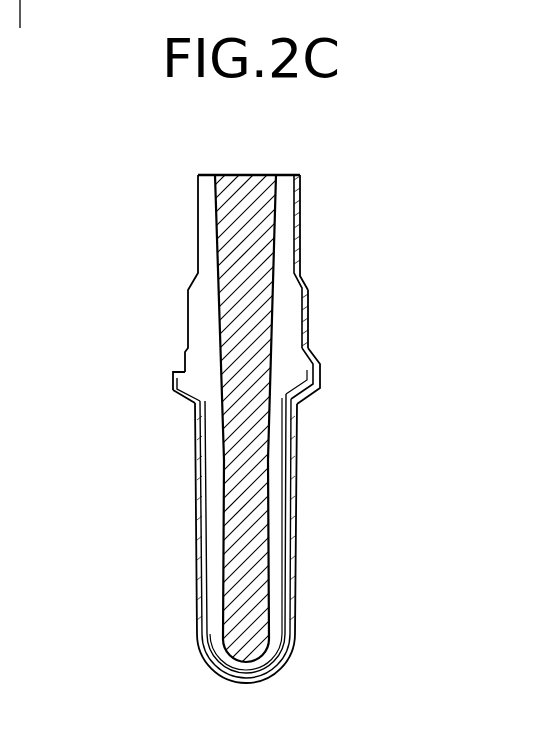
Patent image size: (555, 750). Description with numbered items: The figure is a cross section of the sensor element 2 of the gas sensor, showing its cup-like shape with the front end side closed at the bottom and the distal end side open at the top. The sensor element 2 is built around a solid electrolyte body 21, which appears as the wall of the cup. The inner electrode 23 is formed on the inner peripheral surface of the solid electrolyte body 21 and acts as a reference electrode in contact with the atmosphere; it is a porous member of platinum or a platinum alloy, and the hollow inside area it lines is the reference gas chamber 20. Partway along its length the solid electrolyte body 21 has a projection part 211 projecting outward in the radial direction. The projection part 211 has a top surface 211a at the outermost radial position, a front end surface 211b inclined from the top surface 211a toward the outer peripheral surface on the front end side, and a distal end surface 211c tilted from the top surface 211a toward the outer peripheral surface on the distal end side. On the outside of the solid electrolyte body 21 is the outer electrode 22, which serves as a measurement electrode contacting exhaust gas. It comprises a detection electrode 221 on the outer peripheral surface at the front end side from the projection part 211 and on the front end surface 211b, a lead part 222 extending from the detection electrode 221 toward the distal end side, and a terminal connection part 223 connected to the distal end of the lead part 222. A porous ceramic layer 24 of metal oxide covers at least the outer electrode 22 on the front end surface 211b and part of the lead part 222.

The sensor element 2 is at (165, 168).
The reference gas chamber 20 is at (246, 594).
The solid electrolyte body 21 is at (203, 220).
The projection part 211 is at (318, 362).
The top surface 211a is at (181, 366).
The front end surface 211b is at (303, 395).
The distal end surface 211c is at (185, 348).
The outer electrode 22 is at (345, 429).
The detection electrode 221 is at (297, 522).
The lead part 222 is at (306, 312).
The terminal connection part 223 is at (301, 190).
The inner electrode 23 is at (257, 187).
The porous ceramic layer 24 is at (295, 570).